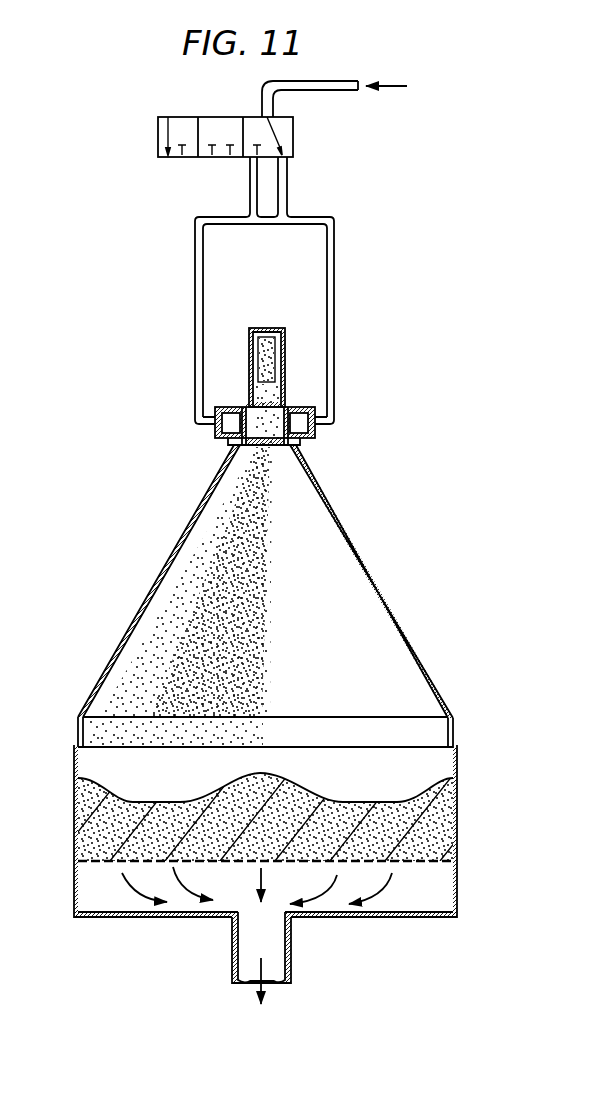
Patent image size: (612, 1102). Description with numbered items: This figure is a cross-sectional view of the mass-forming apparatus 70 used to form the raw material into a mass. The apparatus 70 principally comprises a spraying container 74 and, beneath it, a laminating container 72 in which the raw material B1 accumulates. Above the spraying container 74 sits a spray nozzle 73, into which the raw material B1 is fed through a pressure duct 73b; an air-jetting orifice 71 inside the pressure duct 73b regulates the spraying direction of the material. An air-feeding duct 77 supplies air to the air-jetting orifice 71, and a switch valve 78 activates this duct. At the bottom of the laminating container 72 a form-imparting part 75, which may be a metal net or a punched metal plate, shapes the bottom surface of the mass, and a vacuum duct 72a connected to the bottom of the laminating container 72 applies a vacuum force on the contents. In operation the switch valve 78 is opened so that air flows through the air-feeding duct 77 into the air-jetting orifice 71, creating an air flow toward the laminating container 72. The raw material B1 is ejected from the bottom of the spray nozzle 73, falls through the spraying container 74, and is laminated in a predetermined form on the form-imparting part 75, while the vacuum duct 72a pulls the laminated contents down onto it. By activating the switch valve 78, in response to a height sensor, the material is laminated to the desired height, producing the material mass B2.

The mass-forming apparatus 70 is at (167, 105).
The air-jetting orifice 71 is at (312, 405).
The laminating container 72 is at (457, 890).
The vacuum duct 72a is at (291, 946).
The spray nozzle 73 is at (285, 343).
The pressure duct 73b is at (267, 337).
The spraying container 74 is at (383, 583).
The form-imparting part 75 is at (93, 861).
The air-feeding duct 77 is at (343, 81).
The switch valve 78 is at (158, 143).
The raw material B1 is at (258, 487).
The material mass B2 is at (433, 820).